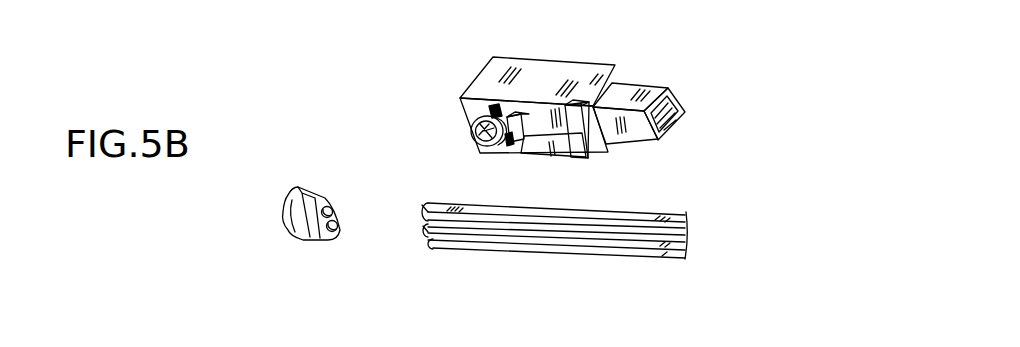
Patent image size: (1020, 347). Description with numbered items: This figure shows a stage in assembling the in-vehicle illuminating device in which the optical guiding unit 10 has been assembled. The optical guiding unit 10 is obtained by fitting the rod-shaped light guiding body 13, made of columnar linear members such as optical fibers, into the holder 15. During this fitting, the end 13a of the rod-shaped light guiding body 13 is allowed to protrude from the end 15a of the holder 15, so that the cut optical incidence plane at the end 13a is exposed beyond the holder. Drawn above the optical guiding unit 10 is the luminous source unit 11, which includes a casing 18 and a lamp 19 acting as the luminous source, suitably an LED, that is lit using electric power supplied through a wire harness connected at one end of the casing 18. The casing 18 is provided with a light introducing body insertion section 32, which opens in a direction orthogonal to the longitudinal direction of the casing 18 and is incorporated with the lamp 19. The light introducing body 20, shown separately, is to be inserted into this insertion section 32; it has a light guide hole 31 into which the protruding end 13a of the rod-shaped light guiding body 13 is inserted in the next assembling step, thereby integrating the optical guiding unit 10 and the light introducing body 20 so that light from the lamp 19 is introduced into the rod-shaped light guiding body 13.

The optical guiding unit 10 is at (555, 249).
The luminous source unit 11 is at (596, 58).
The rod-shaped light guiding body 13 is at (480, 238).
The end of the rod-shaped light guiding body 13a is at (418, 218).
The holder 15 is at (643, 215).
The end of the holder 15a is at (424, 209).
The casing 18 is at (535, 73).
The lamp 19 is at (477, 133).
The light introducing body 20 is at (312, 218).
The light guide hole 31 is at (337, 227).
The light introducing body insertion section 32 is at (480, 107).